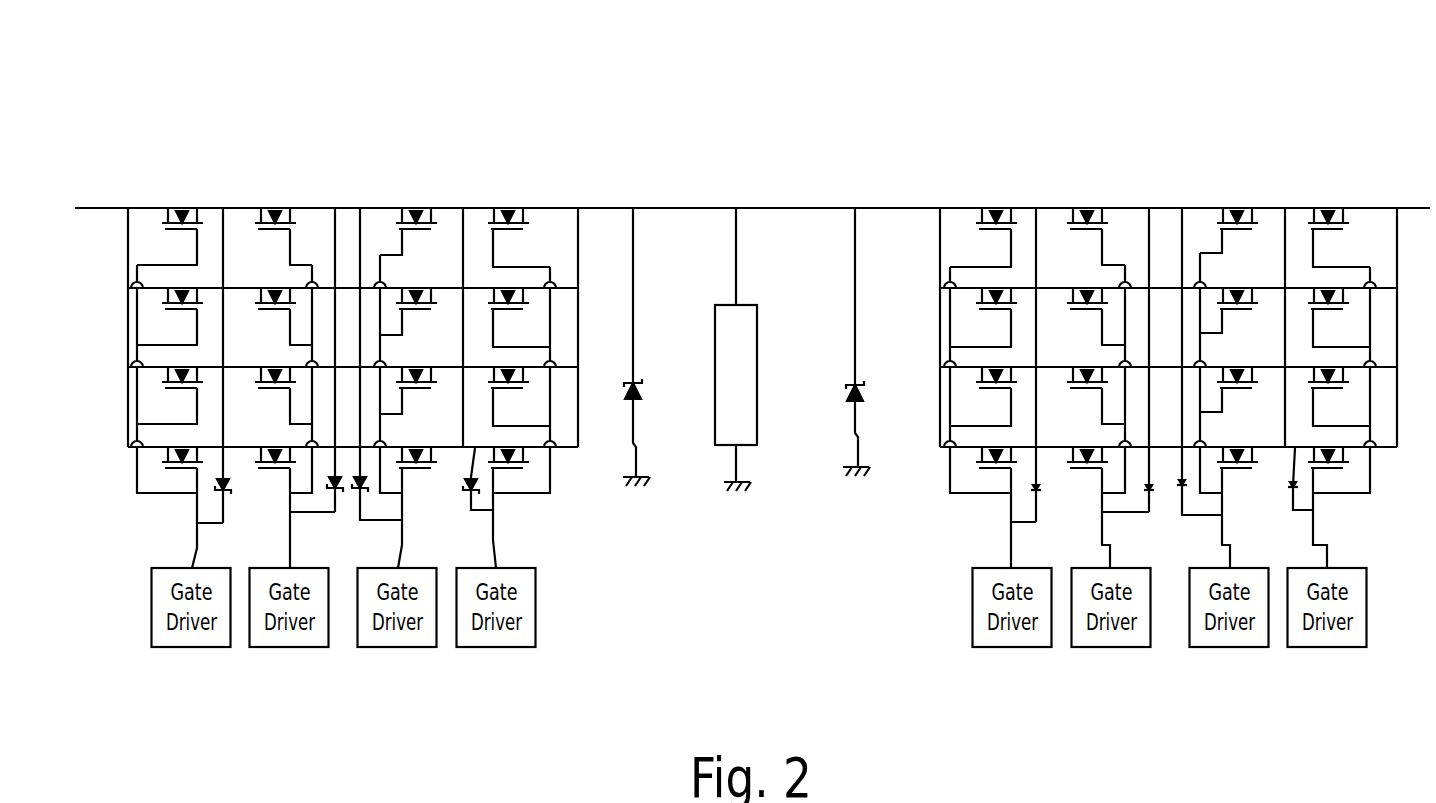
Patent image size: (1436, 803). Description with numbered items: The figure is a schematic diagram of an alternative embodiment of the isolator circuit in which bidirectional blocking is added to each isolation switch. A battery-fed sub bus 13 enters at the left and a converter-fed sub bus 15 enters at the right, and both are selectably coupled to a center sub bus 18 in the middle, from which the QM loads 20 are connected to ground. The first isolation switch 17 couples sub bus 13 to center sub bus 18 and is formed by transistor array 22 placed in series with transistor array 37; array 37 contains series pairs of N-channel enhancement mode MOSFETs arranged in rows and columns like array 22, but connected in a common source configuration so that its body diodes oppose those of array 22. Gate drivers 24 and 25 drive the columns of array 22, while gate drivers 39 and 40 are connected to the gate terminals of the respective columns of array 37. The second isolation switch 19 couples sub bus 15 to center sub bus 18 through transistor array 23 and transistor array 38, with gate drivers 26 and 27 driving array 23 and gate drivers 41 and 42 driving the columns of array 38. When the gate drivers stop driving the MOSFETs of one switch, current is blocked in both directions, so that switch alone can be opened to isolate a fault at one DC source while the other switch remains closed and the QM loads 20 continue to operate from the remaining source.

The sub bus 13 is at (98, 208).
The sub bus 15 is at (1423, 208).
The isolation switch 17 is at (353, 309).
The center sub bus 18 is at (774, 208).
The isolation switch 19 is at (1168, 306).
The QM loads 20 is at (757, 343).
The transistor array 22 is at (230, 170).
The transistor array 23 is at (1275, 178).
The gate driver 24 is at (152, 600).
The gate driver 25 is at (268, 647).
The gate driver 26 is at (1218, 647).
The gate driver 27 is at (1342, 647).
The transistor array 37 is at (483, 165).
The transistor array 38 is at (1036, 186).
The gate driver 39 is at (380, 647).
The gate driver 40 is at (507, 647).
The gate driver 41 is at (993, 647).
The gate driver 42 is at (1120, 647).